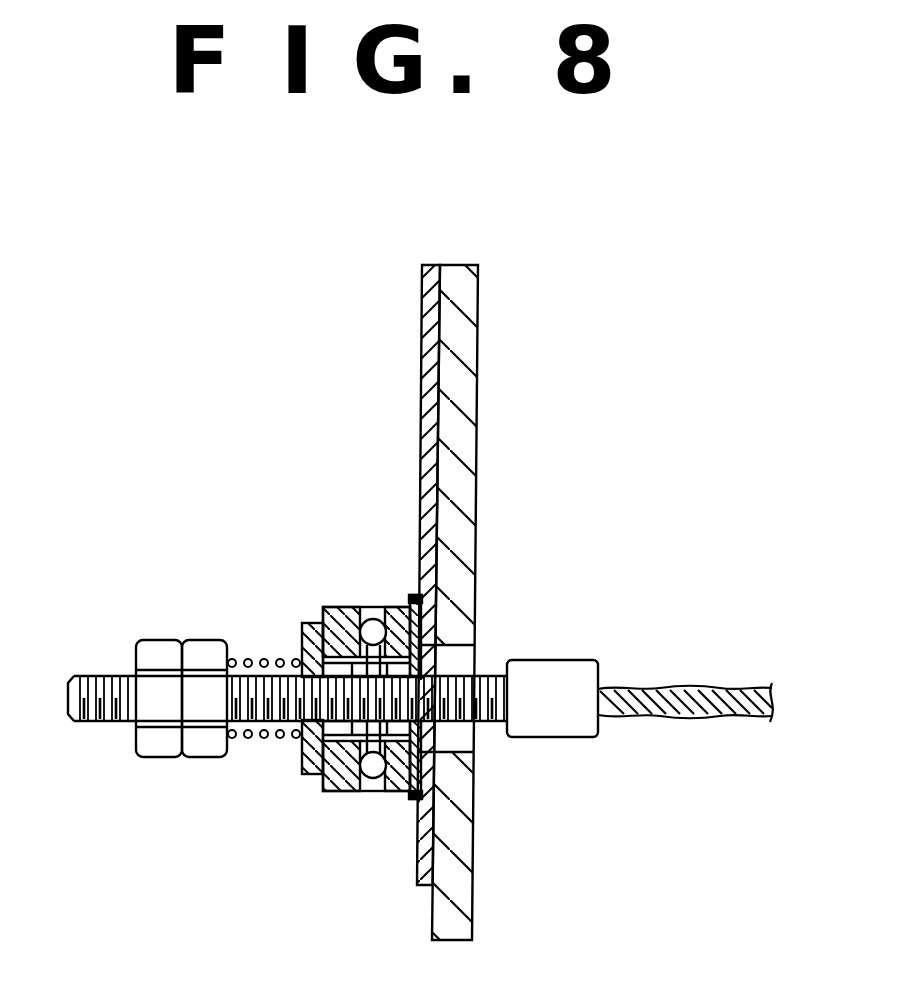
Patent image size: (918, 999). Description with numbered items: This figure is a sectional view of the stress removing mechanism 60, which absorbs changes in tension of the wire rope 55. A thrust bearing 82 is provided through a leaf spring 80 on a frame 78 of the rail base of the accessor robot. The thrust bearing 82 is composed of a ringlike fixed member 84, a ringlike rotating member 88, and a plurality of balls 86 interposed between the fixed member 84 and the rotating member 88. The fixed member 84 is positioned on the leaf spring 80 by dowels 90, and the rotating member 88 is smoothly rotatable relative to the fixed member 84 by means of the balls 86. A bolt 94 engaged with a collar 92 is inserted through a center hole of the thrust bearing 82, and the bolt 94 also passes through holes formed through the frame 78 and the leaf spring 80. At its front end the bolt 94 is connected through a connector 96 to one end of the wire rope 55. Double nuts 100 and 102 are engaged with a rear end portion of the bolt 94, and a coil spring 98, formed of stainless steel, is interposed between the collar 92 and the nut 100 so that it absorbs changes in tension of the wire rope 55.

The wire rope 55 is at (705, 689).
The stress removing mechanism 60 is at (206, 489).
The frame 78 is at (477, 327).
The leaf spring 80 is at (423, 330).
The thrust bearing 82 is at (336, 588).
The fixed member 84 is at (388, 792).
The balls 86 is at (372, 619).
The rotating member 88 is at (327, 792).
The dowels 90 is at (411, 596).
The collar 92 is at (307, 621).
The bolt 94 is at (453, 676).
The connector 96 is at (562, 727).
The coil spring 98 is at (262, 658).
The nut 100 is at (190, 757).
The nut 102 is at (157, 646).